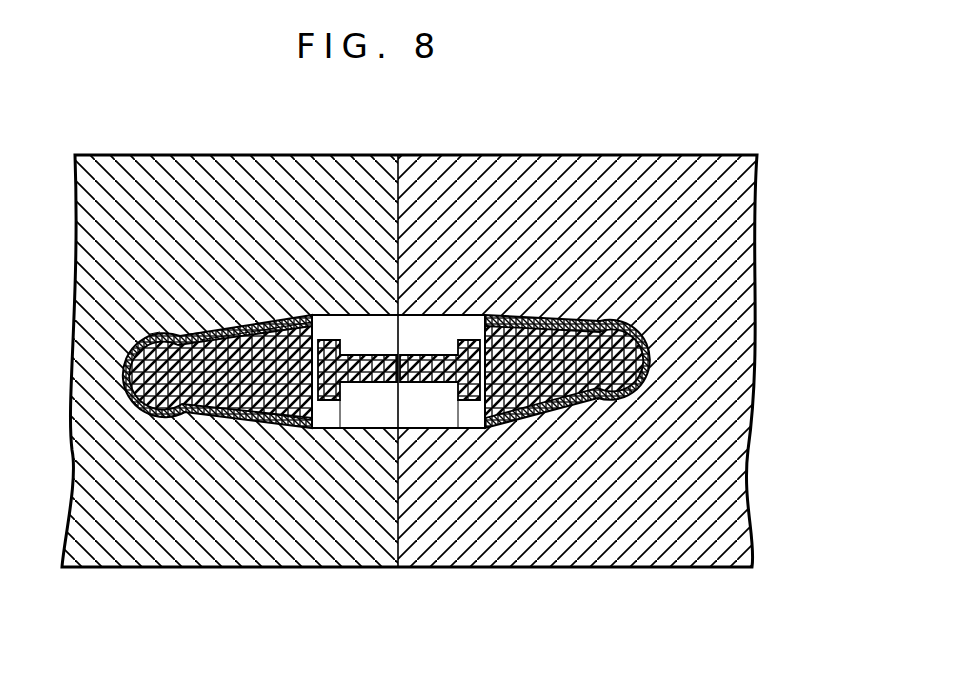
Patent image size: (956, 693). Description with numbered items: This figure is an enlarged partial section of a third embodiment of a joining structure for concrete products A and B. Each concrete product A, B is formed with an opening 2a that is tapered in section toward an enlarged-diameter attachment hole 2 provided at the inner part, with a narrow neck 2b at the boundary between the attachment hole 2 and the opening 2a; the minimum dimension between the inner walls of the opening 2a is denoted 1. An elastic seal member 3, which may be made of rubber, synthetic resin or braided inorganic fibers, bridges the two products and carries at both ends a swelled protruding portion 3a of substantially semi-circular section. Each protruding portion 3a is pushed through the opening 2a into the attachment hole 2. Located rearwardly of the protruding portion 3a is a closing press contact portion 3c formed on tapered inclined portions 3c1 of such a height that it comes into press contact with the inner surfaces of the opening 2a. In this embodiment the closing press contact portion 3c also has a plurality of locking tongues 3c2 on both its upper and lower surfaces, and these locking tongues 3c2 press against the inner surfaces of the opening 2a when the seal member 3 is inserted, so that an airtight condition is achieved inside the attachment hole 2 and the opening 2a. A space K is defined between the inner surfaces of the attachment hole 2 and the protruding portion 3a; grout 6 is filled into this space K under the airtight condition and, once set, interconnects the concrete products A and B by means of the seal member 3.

The minimum dimension 1 is at (396, 206).
The attachment hole 2 is at (410, 350).
The opening 2a is at (346, 416).
The neck 2b is at (197, 323).
The seal member 3 is at (361, 382).
The swelled protruding portion 3a is at (120, 396).
The closing press contact portion 3c is at (386, 490).
The tapered inclined portion 3c1 is at (262, 428).
The locking tongue 3c2 is at (284, 428).
The grout 6 is at (157, 330).
The concrete product A is at (250, 160).
The concrete product B is at (587, 165).
The space K is at (140, 408).